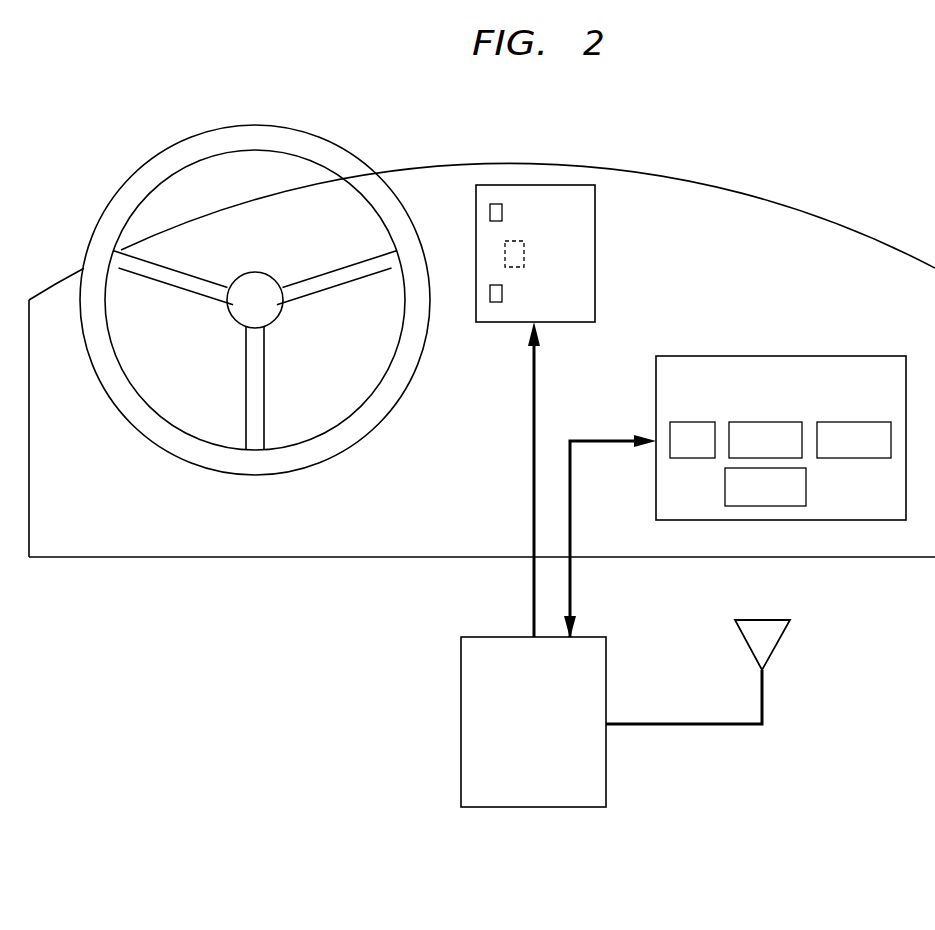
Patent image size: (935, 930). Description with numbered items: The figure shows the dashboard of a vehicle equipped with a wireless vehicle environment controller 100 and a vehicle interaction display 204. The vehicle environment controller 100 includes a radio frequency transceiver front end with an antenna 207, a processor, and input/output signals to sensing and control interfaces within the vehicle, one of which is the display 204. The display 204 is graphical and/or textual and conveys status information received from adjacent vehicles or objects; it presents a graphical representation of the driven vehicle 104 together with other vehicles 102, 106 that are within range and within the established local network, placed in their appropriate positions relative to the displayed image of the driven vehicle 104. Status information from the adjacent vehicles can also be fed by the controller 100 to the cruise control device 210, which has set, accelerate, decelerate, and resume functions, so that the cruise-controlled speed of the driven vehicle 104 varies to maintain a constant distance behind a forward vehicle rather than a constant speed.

The wireless vehicle environment controller 100 is at (532, 807).
The other vehicle 102 is at (502, 213).
The driven vehicle 104 is at (524, 252).
The other vehicle 106 is at (502, 294).
The display 204 is at (595, 255).
The antenna 207 is at (683, 724).
The cruise control device 210 is at (778, 356).